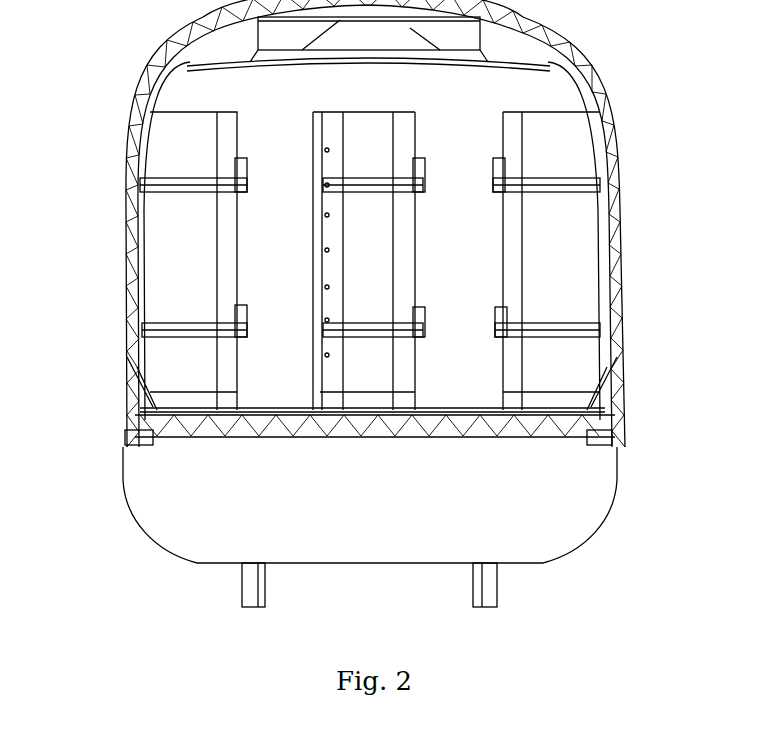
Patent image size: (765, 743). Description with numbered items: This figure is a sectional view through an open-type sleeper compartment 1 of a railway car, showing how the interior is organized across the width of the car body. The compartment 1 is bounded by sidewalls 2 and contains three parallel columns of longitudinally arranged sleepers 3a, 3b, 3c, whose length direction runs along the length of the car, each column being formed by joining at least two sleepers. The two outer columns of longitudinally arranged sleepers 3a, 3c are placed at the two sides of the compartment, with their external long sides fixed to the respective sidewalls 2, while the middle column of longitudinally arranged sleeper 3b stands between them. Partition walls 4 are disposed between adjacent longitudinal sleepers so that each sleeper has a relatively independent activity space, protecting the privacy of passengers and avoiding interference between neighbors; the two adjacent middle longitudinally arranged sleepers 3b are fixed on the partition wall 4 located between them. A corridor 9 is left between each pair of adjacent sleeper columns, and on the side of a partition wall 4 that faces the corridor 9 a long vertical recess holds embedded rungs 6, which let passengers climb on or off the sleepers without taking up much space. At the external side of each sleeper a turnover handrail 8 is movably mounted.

The sleeper compartment 1 is at (135, 104).
The sidewall 2 is at (130, 133).
The longitudinally arranged sleeper 3a is at (150, 261).
The middle longitudinally arranged sleeper 3b is at (503, 261).
The longitudinally arranged sleeper 3c is at (548, 187).
The partition wall 4 is at (180, 352).
The embedded rung 6 is at (410, 147).
The turnover handrail 8 is at (240, 163).
The corridor 9 is at (273, 384).